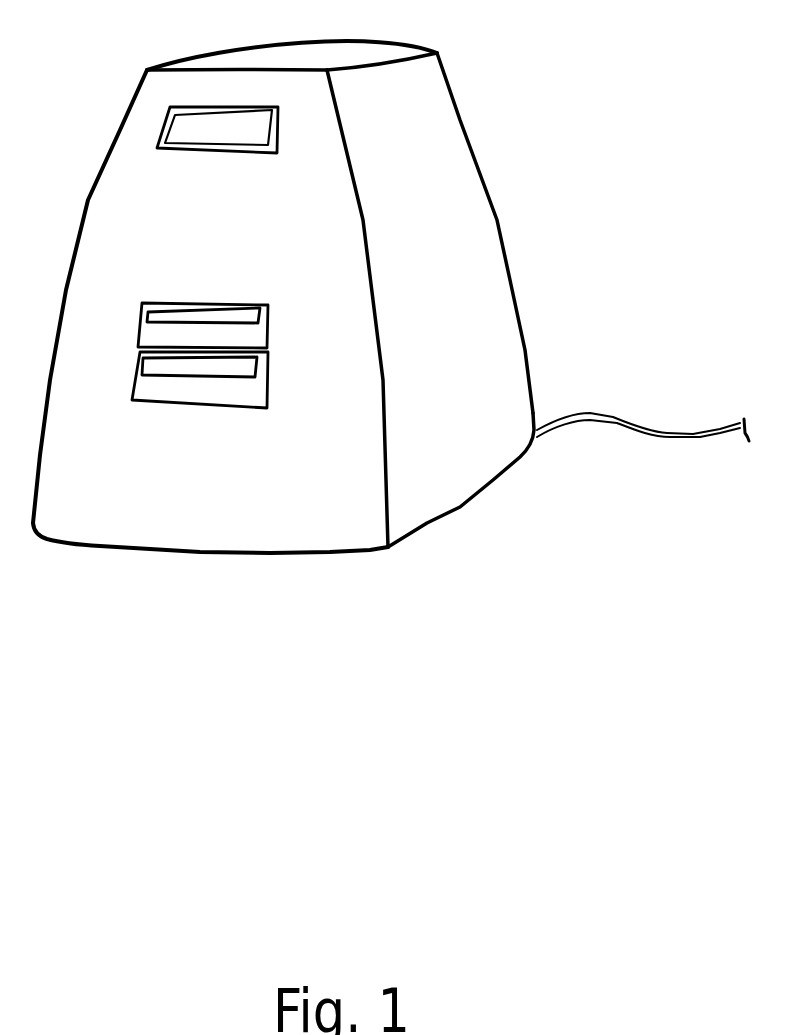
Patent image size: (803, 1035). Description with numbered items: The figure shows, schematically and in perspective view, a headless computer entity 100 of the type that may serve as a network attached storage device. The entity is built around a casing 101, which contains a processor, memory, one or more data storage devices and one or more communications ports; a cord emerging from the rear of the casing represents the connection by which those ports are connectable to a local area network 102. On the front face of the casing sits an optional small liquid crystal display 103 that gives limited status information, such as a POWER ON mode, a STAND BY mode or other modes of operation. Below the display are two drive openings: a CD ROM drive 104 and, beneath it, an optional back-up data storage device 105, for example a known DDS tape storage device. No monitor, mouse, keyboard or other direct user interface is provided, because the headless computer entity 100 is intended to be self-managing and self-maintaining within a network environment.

The headless computer entity 100 is at (391, 281).
The casing 101 is at (463, 182).
The local area network 102 is at (592, 413).
The liquid crystal display 103 is at (212, 138).
The CD ROM drive 104 is at (252, 335).
The back-up data storage device 105 is at (250, 392).